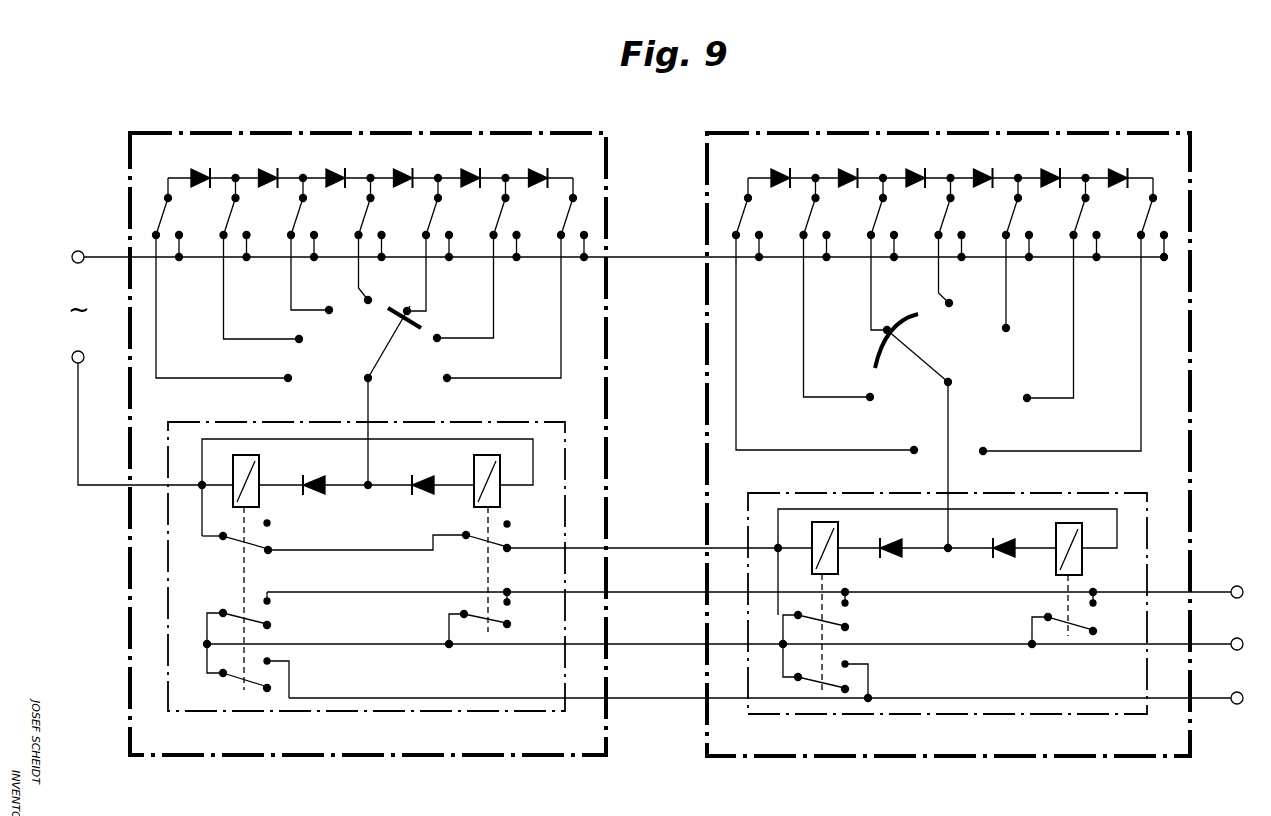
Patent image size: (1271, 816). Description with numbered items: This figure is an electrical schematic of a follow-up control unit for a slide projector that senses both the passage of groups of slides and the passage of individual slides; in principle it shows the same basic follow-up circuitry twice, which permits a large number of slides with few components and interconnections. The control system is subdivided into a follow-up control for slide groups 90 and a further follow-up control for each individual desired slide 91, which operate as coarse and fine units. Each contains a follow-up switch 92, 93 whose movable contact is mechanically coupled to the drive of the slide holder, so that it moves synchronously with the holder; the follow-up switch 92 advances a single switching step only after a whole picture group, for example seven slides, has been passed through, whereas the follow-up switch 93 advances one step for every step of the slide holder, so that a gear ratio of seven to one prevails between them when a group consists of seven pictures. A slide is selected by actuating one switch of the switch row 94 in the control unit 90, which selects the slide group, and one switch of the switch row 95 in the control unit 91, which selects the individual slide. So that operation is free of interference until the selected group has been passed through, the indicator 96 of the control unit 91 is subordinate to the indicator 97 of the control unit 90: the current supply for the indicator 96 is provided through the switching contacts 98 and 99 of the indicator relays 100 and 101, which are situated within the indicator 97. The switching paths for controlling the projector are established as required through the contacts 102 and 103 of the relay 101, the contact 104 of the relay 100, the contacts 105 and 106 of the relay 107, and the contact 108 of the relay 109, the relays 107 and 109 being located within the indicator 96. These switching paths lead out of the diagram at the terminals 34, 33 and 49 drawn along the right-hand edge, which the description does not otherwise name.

The follow-up control for slide groups 90 is at (337, 126).
The follow-up control for each individual desired slide 91 is at (965, 126).
The follow-up switch 92 is at (388, 343).
The follow-up switch 93 is at (913, 357).
The switch row 94 is at (583, 219).
The switch row 95 is at (1167, 220).
The indicator 96 is at (748, 521).
The indicator 97 is at (167, 623).
The switching contact 98 is at (487, 541).
The switching contact 99 is at (244, 543).
The indicator relay 100 is at (497, 493).
The indicator relay 101 is at (257, 495).
The contact 102 is at (252, 618).
The contact 103 is at (235, 682).
The contact 104 is at (492, 620).
The contact 105 is at (832, 626).
The contact 106 is at (828, 676).
The relay 107 is at (835, 561).
The contact 108 is at (1080, 622).
The relay 109 is at (1081, 561).
The output terminal 33 is at (1233, 640).
The output terminal 34 is at (1233, 588).
The output terminal 49 is at (1233, 694).